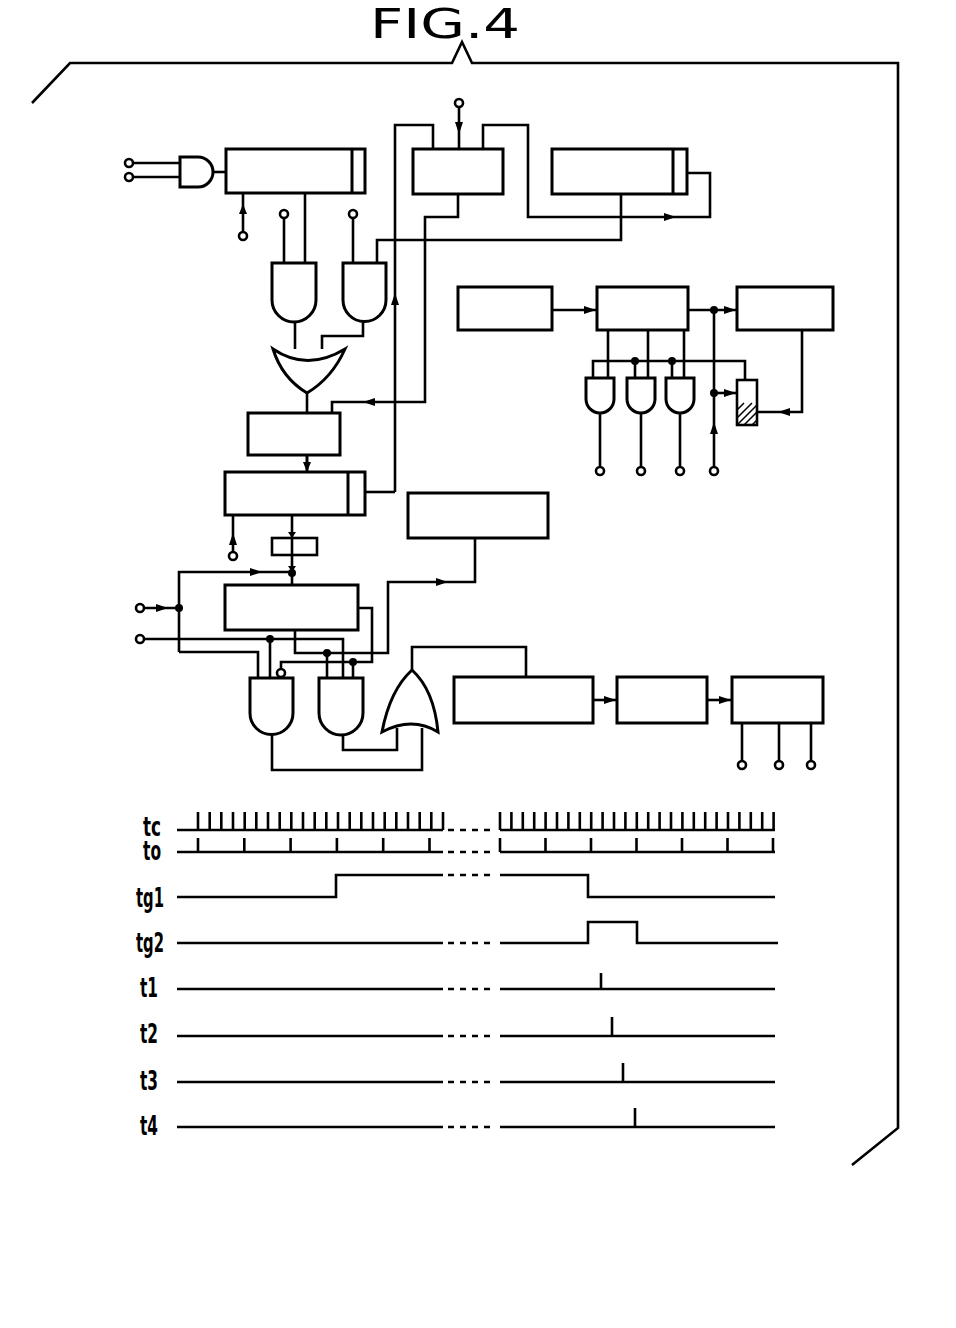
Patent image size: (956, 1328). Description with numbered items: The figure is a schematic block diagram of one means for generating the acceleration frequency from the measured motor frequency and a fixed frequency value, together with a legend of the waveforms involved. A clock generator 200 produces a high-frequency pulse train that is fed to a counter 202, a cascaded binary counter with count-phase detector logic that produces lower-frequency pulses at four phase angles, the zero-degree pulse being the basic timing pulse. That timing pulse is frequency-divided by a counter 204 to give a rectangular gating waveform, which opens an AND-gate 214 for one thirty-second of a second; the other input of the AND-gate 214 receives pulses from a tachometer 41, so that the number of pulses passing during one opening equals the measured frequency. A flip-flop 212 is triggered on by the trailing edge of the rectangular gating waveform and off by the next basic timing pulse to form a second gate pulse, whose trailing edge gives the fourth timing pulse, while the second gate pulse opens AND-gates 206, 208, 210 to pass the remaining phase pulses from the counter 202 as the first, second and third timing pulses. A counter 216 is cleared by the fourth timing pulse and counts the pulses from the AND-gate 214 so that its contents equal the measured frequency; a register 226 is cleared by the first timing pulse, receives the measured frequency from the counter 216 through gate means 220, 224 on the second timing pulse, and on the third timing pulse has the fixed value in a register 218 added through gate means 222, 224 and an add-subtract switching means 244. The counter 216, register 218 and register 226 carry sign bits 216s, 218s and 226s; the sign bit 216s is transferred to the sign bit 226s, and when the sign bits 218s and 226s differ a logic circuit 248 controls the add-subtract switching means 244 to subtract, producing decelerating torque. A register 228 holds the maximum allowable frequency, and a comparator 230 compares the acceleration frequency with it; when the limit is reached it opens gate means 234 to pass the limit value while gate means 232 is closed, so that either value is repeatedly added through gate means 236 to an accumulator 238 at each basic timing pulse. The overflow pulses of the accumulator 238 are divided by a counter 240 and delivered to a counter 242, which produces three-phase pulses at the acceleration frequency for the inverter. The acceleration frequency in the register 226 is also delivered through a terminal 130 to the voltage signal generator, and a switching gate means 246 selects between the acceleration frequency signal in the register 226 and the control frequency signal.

The tachometer 41 is at (151, 149).
The terminal 130 is at (210, 623).
The clock generator 200 is at (527, 304).
The counter 202 is at (669, 333).
The counter 204 is at (785, 351).
The AND-gate 206 is at (589, 394).
The AND-gate 208 is at (631, 402).
The AND-gate 210 is at (672, 407).
The flip-flop 212 is at (743, 421).
The AND-gate 214 is at (197, 156).
The counter 216 is at (279, 149).
The sign bit 216s is at (352, 149).
The register 218 is at (595, 149).
The sign bit 218s is at (680, 140).
The gate means 220 is at (289, 274).
The gate means 222 is at (471, 271).
The gate means 224 is at (276, 369).
The register 226 is at (225, 491).
The sign bit 226s is at (366, 474).
The register 228 is at (448, 494).
The comparator 230 is at (298, 631).
The gate means 232 is at (279, 702).
The gate means 234 is at (358, 701).
The gate means 236 is at (454, 689).
The accumulator 238 is at (535, 700).
The counter 240 is at (674, 700).
The counter 242 is at (777, 737).
The add-subtract switching means 244 is at (294, 442).
The switching gate means 246 is at (317, 554).
The logic circuit 248 is at (521, 281).